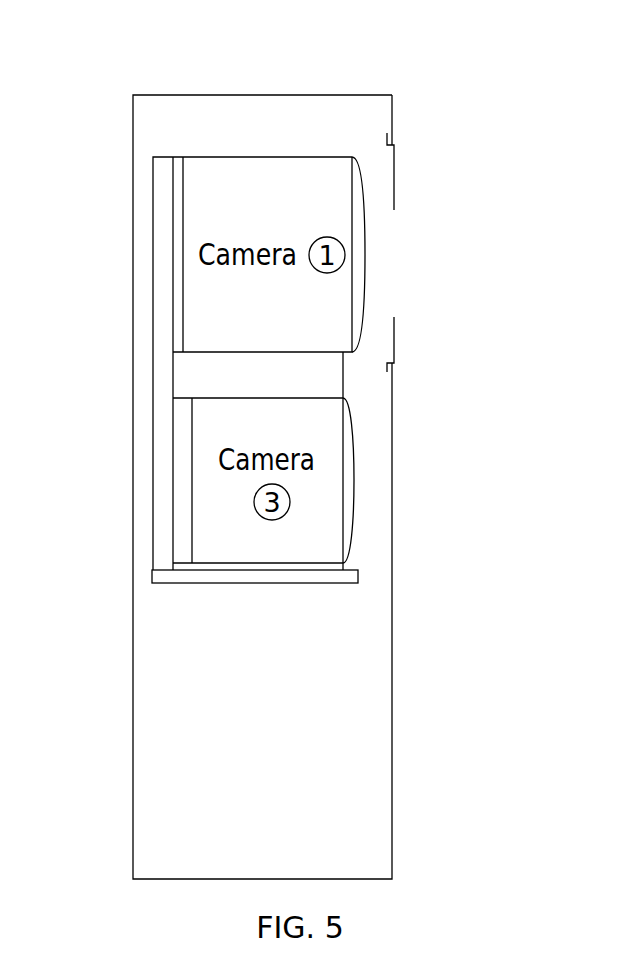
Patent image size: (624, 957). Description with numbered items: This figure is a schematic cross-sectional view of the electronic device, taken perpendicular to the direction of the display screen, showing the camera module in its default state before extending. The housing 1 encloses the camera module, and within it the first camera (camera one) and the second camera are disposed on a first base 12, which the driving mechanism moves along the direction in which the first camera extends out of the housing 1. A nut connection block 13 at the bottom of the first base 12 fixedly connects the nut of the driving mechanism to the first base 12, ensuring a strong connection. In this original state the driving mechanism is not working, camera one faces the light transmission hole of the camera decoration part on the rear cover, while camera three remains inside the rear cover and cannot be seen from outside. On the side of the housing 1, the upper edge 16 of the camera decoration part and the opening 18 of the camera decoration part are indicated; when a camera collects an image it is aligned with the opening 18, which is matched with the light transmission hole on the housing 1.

The housing 1 is at (277, 95).
The first base 12 is at (153, 252).
The nut connection block 13 is at (173, 575).
The upper edge of the camera decoration part 16 is at (395, 182).
The opening of the camera decoration part 18 is at (402, 278).